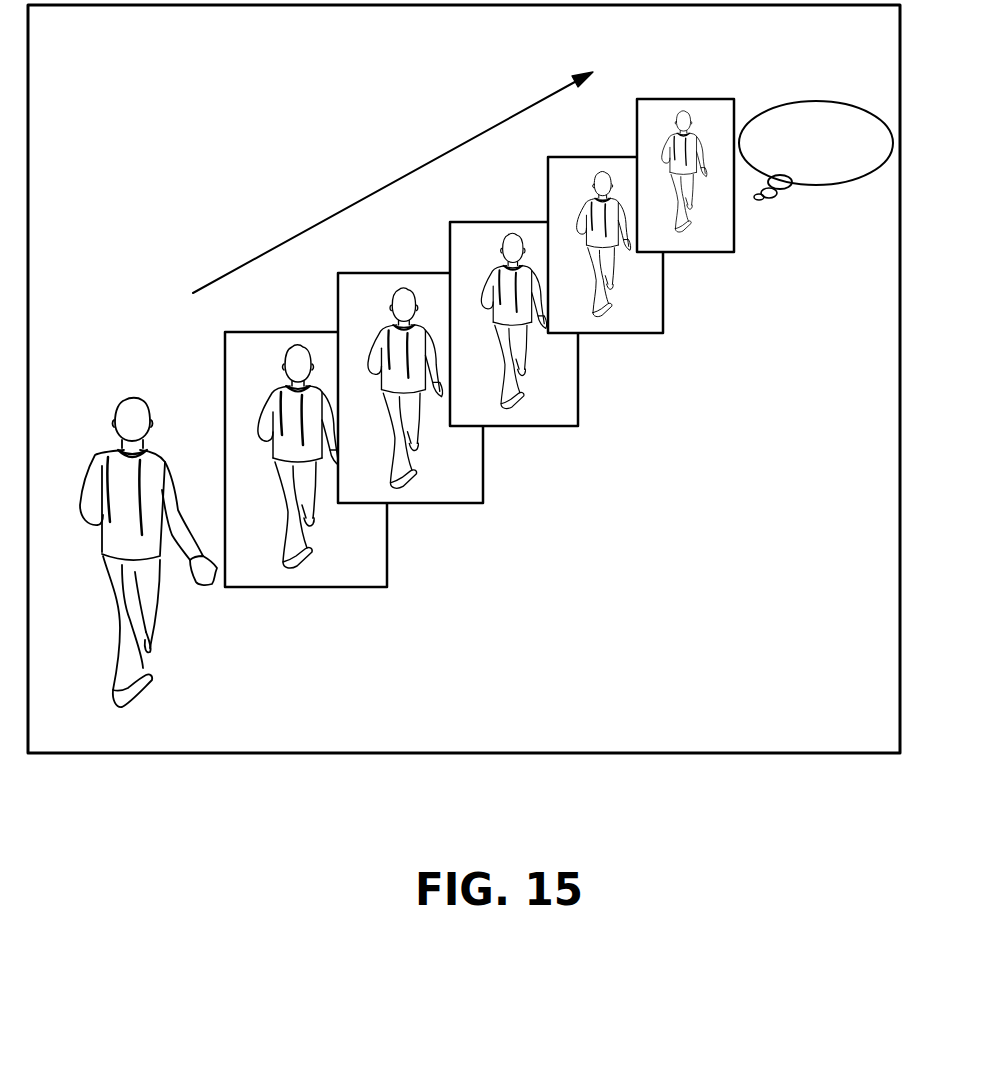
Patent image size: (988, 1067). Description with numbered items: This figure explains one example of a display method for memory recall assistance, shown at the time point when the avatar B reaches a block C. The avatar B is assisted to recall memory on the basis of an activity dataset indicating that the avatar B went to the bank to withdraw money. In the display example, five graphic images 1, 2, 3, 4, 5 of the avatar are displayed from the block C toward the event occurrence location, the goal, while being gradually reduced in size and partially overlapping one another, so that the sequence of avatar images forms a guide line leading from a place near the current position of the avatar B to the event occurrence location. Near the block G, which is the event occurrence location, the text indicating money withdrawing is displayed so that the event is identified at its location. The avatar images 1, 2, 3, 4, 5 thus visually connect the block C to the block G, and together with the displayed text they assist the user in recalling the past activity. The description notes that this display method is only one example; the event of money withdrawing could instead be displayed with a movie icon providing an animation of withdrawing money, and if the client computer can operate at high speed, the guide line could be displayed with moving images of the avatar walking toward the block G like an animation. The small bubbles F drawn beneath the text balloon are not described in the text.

The graphic image of the avatar 1 is at (306, 478).
The graphic image of the avatar 2 is at (410, 408).
The graphic image of the avatar 3 is at (514, 342).
The graphic image of the avatar 4 is at (605, 266).
The graphic image of the avatar 5 is at (685, 192).
The avatar B is at (148, 552).
The block C is at (379, 199).
The thought bubble tail F is at (773, 208).
The block G is at (816, 126).